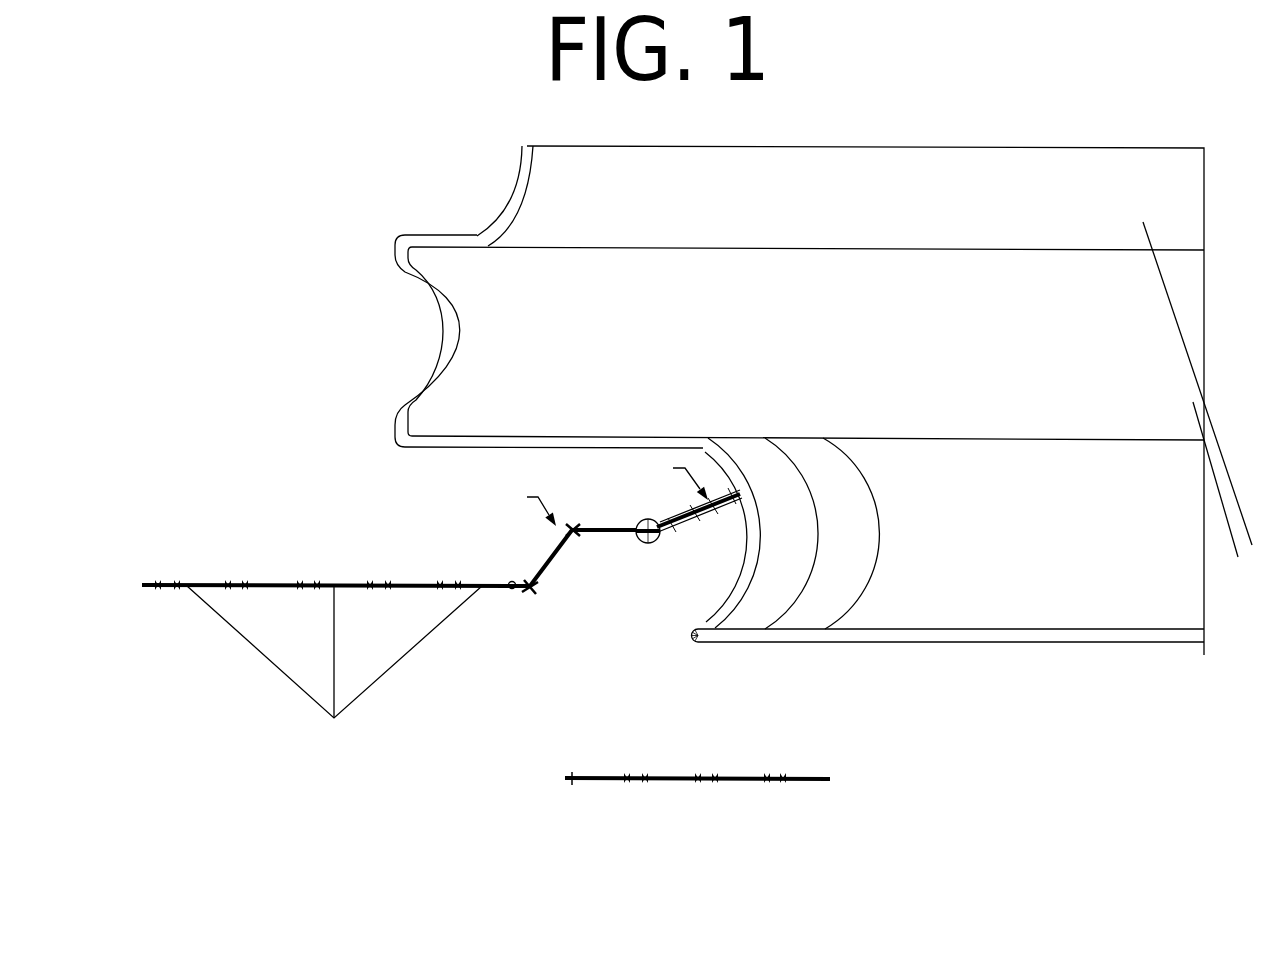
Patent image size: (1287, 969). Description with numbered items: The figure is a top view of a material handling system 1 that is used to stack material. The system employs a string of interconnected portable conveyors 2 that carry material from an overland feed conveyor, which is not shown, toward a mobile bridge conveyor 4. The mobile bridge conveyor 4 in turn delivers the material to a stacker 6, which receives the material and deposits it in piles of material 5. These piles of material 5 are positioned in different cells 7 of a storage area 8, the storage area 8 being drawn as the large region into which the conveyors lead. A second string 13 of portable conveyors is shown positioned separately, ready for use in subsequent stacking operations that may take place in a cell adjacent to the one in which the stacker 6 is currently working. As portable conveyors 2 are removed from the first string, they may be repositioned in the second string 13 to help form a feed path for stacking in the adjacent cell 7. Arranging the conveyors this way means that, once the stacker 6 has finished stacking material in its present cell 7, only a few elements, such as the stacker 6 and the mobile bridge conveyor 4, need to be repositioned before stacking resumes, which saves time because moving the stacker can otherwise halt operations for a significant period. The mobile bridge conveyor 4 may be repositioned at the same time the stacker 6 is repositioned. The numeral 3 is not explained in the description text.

The material handling system 1 is at (210, 503).
The portable conveyors 2 is at (334, 670).
The face conveyor 3 is at (271, 505).
The mobile bridge conveyor 4 is at (588, 533).
The piles of material 5 is at (938, 543).
The stacker 6 is at (720, 500).
The cells 7 is at (1168, 522).
The storage area 8 is at (958, 200).
The second string of portable conveyors 13 is at (492, 765).